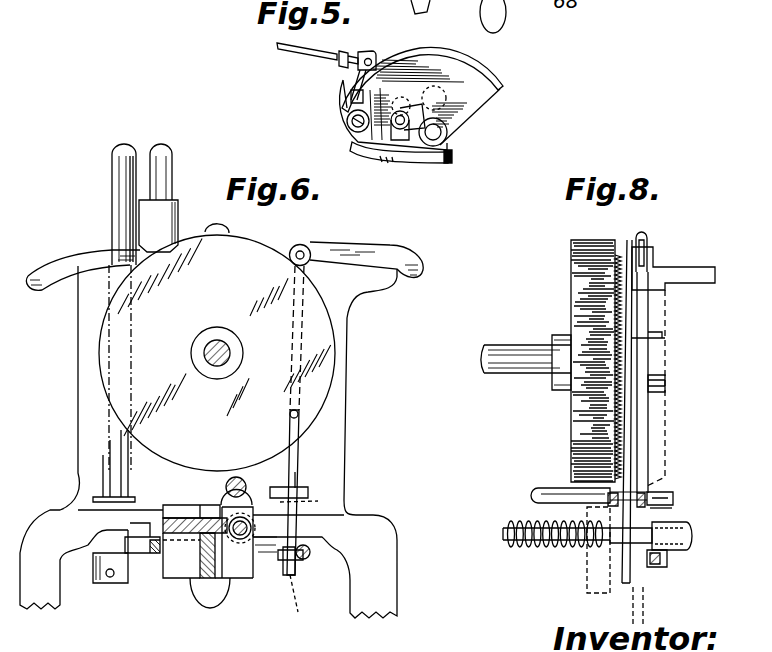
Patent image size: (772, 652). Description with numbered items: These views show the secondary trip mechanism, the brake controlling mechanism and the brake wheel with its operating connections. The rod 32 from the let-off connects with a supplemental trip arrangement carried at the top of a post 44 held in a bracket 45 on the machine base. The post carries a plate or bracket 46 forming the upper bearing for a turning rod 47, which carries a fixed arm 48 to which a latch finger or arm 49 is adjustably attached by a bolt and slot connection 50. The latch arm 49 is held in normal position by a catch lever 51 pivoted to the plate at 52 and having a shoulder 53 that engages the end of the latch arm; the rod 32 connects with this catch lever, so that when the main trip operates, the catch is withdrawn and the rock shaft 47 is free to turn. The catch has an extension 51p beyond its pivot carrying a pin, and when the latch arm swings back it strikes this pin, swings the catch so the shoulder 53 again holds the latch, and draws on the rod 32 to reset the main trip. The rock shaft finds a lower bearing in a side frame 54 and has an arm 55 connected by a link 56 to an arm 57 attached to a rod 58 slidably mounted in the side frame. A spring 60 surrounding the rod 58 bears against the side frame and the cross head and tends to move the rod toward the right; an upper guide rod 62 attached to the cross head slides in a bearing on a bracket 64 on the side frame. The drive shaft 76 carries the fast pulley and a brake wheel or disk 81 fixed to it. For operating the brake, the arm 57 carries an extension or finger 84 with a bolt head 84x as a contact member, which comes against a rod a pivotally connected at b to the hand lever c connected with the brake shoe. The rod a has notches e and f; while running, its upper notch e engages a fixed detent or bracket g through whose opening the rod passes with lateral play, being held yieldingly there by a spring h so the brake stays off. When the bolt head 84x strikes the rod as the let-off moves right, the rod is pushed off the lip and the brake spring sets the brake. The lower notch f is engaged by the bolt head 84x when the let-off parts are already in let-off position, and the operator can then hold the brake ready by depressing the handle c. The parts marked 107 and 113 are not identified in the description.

In FIG. 5, the rod 32 is at (312, 54).
In FIG. 5, the post 44 is at (472, 113).
In FIG. 6, the post 44 is at (156, 152).
In FIG. 6, the bracket 45 is at (148, 214).
In FIG. 5, the plate or bracket 46 is at (500, 70).
In FIG. 5, the rod 47 is at (447, 138).
In FIG. 6, the rod 47 is at (118, 160).
In FIG. 5, the arm 48 is at (446, 96).
In FIG. 5, the latch finger or arm 49 is at (397, 111).
In FIG. 5, the bolt and slot connection 50 is at (408, 98).
In FIG. 5, the catch lever 51 is at (376, 58).
In FIG. 5, the extension of catch 51p is at (354, 133).
In FIG. 5, the pivot 52 is at (347, 121).
In FIG. 5, the shoulder 53 is at (351, 98).
In FIG. 6, the side frame 54 is at (85, 390).
In FIG. 6, the arm 55 is at (132, 575).
In FIG. 6, the link 56 is at (147, 553).
In FIG. 6, the arm 57 is at (145, 530).
In FIG. 6, the rod 58 is at (238, 537).
In FIG. 8, the rod 58 is at (545, 546).
In FIG. 8, the spring 60 is at (512, 540).
In FIG. 6, the upper guide rod 62 is at (226, 488).
In FIG. 8, the upper guide rod 62 is at (551, 490).
In FIG. 6, the bracket 64 is at (225, 582).
In FIG. 6, the drive shaft 76 is at (212, 346).
In FIG. 8, the drive shaft 76 is at (500, 358).
In FIG. 6, the brake wheel or disk 81 is at (140, 333).
In FIG. 8, the brake wheel or disk 81 is at (588, 282).
In FIG. 6, the extension or finger 84 is at (283, 562).
In FIG. 8, the extension or finger 84 is at (675, 552).
In FIG. 6, the bolt head 84x is at (306, 560).
In FIG. 8, the bolt head 84x is at (650, 566).
In FIG. 5, the pin 107 is at (452, 160).
In FIG. 5, the bracket 113 is at (405, 161).
In FIG. 6, the rod a is at (297, 470).
In FIG. 8, the rod a is at (649, 410).
In FIG. 6, the pivotal connection b is at (309, 249).
In FIG. 8, the pivotal connection b is at (655, 275).
In FIG. 6, the hand lever c is at (423, 266).
In FIG. 8, the hand lever c is at (648, 250).
In FIG. 6, the upper notch e is at (306, 504).
In FIG. 8, the upper notch e is at (660, 508).
In FIG. 6, the lower notch f is at (298, 601).
In FIG. 8, the lower notch f is at (624, 578).
In FIG. 6, the fixed detent or bracket g is at (308, 490).
In FIG. 8, the fixed detent or bracket g is at (676, 494).
In FIG. 6, the spring h is at (295, 475).
In FIG. 8, the spring h is at (612, 515).